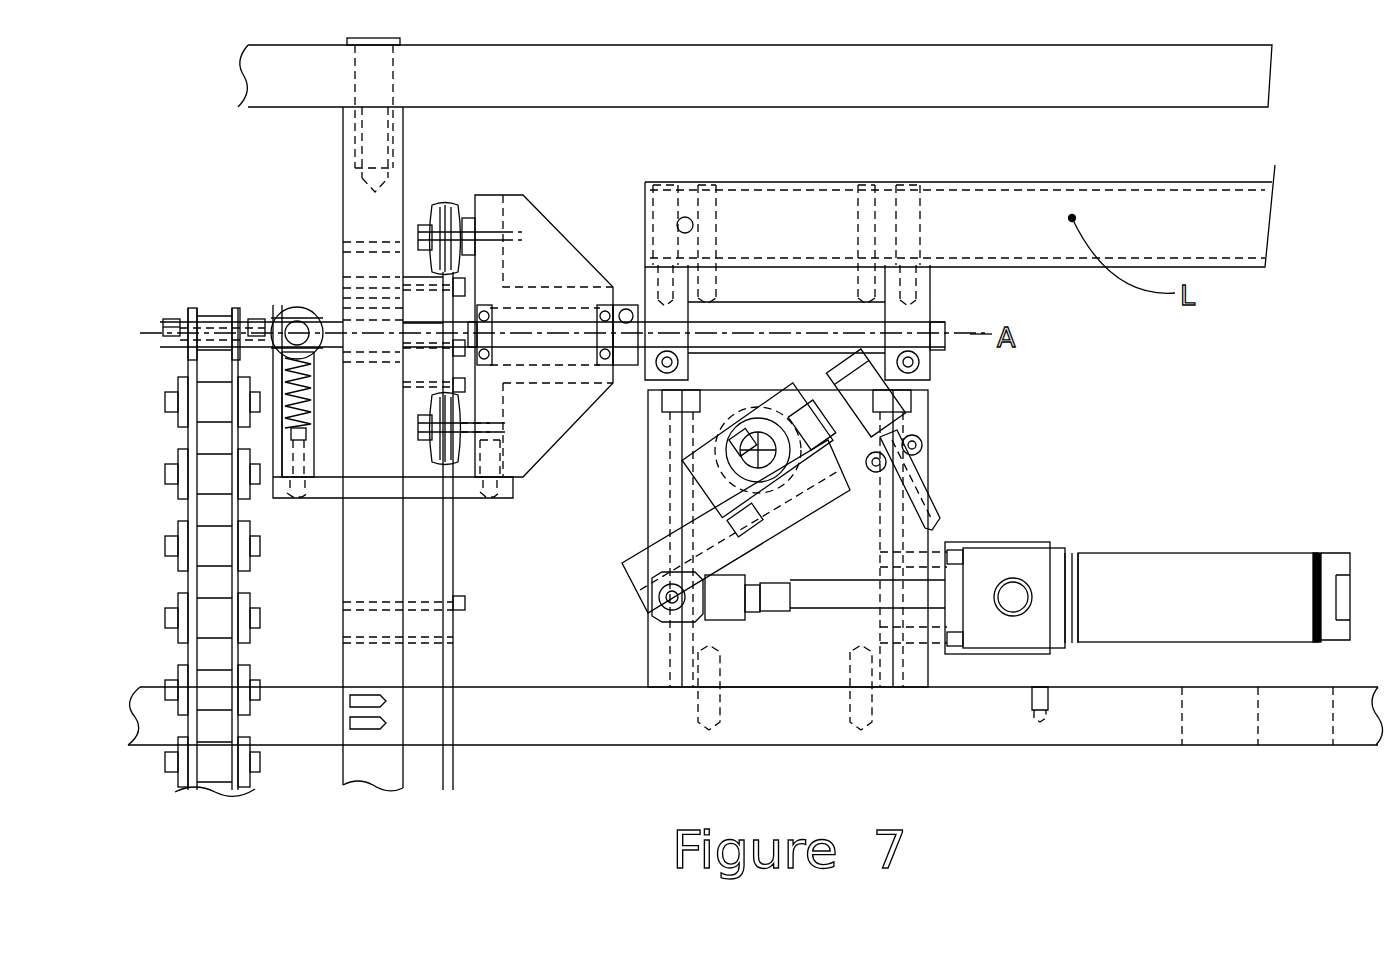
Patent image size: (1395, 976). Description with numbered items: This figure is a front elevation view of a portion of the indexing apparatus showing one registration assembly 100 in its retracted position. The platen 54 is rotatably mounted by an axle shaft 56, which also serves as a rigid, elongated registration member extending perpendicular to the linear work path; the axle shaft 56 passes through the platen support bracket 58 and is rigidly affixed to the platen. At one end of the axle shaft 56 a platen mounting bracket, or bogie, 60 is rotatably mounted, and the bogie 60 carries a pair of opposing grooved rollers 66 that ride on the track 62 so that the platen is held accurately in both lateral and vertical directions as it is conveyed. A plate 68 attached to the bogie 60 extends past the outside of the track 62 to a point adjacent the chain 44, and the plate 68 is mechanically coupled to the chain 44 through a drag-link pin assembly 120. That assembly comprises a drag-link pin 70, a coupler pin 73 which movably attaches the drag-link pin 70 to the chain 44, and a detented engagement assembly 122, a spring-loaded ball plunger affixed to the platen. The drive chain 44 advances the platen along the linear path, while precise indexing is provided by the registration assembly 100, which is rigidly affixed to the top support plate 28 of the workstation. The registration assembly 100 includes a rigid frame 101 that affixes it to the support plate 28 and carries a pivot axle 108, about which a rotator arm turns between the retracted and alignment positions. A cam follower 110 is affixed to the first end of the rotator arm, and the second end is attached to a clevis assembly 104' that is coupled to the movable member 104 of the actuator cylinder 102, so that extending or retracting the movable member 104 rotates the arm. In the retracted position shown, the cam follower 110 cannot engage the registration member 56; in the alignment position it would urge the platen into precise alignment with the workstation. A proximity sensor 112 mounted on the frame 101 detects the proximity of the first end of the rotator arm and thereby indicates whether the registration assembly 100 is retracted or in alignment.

The top support plate 28 is at (755, 695).
The chain 44 is at (248, 666).
The platen 54 is at (960, 235).
The axle shaft 56 is at (944, 356).
The platen support bracket 58 is at (935, 289).
The platen mounting bracket 60 is at (567, 230).
The track 62 is at (453, 672).
The rollers 66 is at (450, 232).
The plate 68 is at (470, 496).
The drag-link pin 70 is at (270, 362).
The coupler pin 73 is at (163, 328).
The registration assembly 100 is at (1153, 407).
The rigid frame 101 is at (930, 488).
The actuator 102 is at (1153, 557).
The movable member 104 is at (798, 583).
The clevis assembly 104' is at (749, 526).
The pivot axle 108 is at (765, 440).
The cam follower 110 is at (858, 378).
The proximity sensor 112 is at (920, 459).
The drag-link pin assembly 120 is at (288, 254).
The detented engagement assembly 122 is at (324, 505).